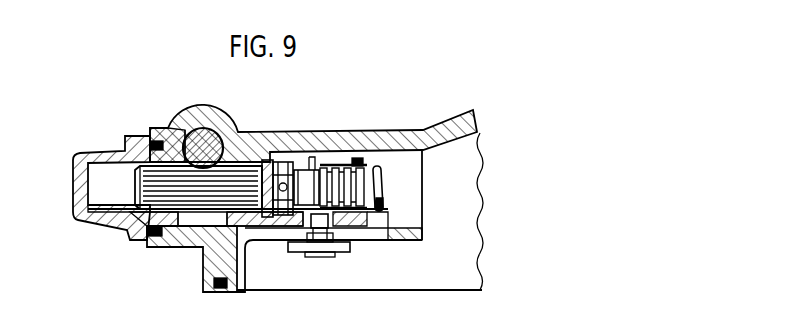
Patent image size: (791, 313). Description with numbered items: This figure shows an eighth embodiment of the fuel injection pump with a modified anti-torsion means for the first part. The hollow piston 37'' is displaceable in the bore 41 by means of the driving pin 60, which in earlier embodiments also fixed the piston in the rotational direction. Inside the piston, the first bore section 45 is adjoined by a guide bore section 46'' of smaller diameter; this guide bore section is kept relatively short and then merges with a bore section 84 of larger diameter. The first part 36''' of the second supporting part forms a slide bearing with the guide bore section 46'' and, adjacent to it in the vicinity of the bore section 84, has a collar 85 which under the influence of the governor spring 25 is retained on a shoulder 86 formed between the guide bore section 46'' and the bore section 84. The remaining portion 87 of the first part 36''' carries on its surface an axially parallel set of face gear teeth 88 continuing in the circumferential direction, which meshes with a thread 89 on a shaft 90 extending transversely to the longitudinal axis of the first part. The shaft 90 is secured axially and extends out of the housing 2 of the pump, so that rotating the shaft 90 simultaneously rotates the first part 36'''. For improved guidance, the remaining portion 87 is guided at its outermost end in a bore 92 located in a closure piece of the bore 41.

The housing 2 is at (460, 126).
The governor spring 25 is at (377, 166).
The first part of the second supporting part 36''' is at (345, 140).
The hollow piston 37'' is at (310, 252).
The bore 41 is at (207, 224).
The first bore section 45 is at (355, 214).
The guide bore section 46'' is at (310, 139).
The driving pin 60 is at (340, 229).
The bore section 84 is at (263, 233).
The collar 85 is at (271, 160).
The shoulder 86 is at (281, 160).
The remaining portion 87 is at (130, 233).
The face gear teeth 88 is at (238, 180).
The thread 89 is at (178, 142).
The shaft 90 is at (200, 137).
The bore 92 is at (110, 206).